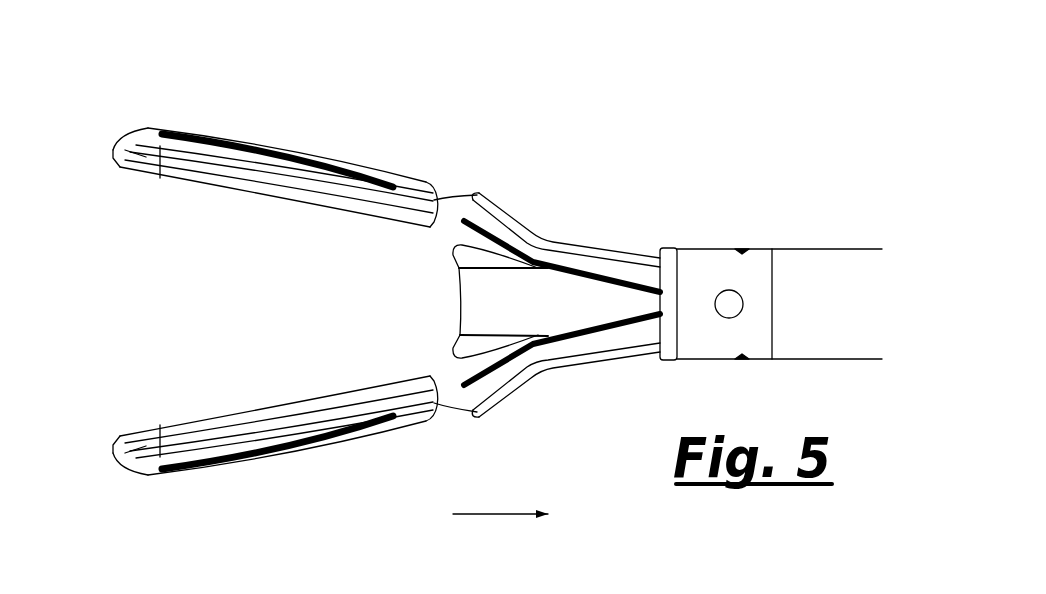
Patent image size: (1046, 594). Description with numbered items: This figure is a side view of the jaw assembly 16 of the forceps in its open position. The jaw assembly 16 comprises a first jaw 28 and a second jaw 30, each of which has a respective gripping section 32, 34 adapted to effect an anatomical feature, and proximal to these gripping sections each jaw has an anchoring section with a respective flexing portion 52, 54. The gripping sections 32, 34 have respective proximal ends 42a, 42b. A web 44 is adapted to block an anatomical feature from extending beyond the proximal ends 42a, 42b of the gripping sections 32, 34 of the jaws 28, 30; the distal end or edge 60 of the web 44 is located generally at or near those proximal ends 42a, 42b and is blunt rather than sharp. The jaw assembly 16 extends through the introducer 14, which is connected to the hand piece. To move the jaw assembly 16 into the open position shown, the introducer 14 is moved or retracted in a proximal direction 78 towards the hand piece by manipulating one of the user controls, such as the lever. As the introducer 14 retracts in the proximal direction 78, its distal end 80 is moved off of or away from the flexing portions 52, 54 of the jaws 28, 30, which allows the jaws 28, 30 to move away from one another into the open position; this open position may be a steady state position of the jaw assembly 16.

The introducer 14 is at (793, 273).
The jaw assembly 16 is at (260, 287).
The first jaw 28 is at (309, 148).
The second jaw 30 is at (246, 470).
The gripping section 32 is at (206, 200).
The gripping section 34 is at (176, 418).
The proximal end 42a is at (450, 228).
The proximal end 42b is at (450, 376).
The web 44 is at (524, 299).
The flexing portion 52 is at (532, 234).
The flexing portion 54 is at (552, 365).
The distal end or edge 60 is at (459, 302).
The proximal direction 78 is at (502, 515).
The distal end 80 is at (660, 256).